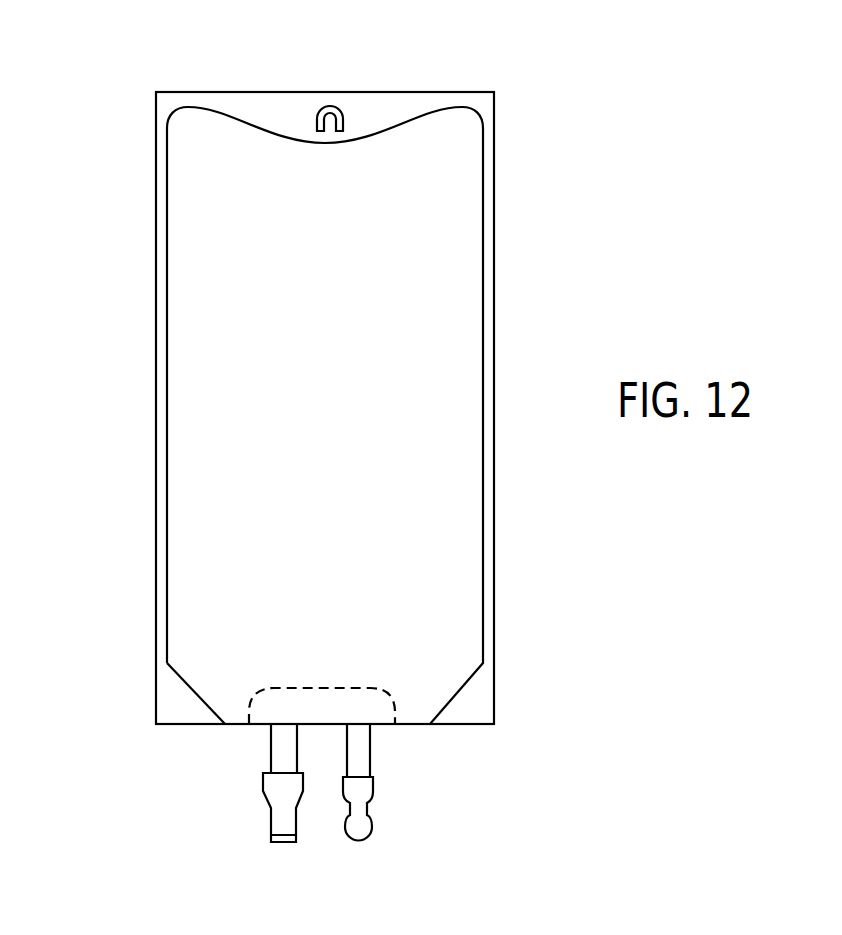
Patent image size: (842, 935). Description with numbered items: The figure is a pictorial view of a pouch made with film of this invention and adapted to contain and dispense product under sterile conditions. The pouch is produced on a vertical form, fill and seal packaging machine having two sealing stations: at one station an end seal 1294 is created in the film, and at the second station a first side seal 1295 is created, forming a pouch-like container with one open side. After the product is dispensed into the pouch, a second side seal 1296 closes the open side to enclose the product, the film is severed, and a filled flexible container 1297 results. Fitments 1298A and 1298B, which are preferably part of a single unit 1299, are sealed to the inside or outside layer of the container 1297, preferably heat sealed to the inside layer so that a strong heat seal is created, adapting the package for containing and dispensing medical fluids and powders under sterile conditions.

The end seal 1294 is at (383, 103).
The first side seal 1295 is at (167, 333).
The second side seal 1296 is at (494, 525).
The filled flexible container 1297 is at (527, 288).
The fitment 1298A is at (271, 758).
The fitment 1298B is at (372, 768).
The single unit 1299 is at (260, 808).